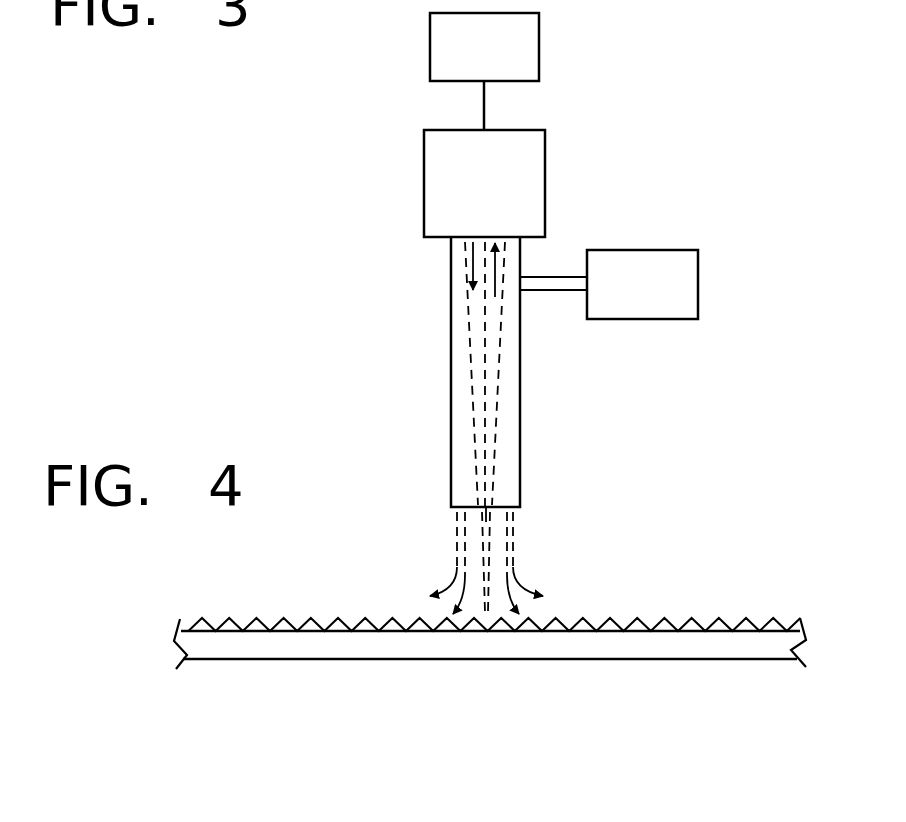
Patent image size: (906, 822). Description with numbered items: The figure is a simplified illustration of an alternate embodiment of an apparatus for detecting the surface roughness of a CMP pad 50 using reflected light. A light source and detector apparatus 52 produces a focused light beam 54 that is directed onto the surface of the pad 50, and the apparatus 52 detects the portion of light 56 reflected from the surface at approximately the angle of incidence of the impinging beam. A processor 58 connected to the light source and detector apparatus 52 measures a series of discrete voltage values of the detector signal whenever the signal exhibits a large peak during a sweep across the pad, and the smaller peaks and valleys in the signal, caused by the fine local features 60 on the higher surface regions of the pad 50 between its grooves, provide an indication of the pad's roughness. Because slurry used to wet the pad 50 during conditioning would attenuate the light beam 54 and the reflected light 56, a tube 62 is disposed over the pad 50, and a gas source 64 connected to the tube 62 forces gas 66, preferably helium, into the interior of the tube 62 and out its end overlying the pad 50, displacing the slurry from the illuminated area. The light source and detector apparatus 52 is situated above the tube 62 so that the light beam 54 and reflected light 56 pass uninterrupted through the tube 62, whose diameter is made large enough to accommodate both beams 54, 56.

The CMP pad 50 is at (769, 645).
The light source and detector apparatus 52 is at (424, 141).
The light beam 54 is at (480, 372).
The reflected light 56 is at (492, 372).
The processor 58 is at (430, 28).
The features 60 is at (678, 617).
The tube 62 is at (520, 446).
The gas source 64 is at (671, 250).
The gas 66 is at (522, 585).